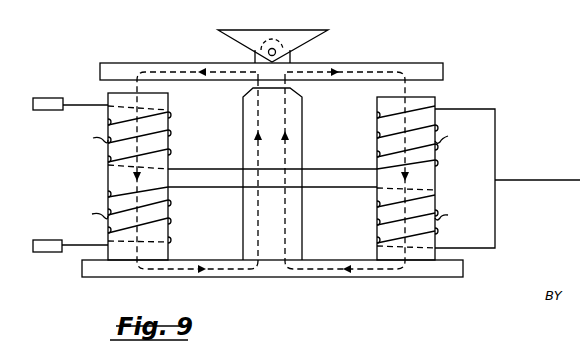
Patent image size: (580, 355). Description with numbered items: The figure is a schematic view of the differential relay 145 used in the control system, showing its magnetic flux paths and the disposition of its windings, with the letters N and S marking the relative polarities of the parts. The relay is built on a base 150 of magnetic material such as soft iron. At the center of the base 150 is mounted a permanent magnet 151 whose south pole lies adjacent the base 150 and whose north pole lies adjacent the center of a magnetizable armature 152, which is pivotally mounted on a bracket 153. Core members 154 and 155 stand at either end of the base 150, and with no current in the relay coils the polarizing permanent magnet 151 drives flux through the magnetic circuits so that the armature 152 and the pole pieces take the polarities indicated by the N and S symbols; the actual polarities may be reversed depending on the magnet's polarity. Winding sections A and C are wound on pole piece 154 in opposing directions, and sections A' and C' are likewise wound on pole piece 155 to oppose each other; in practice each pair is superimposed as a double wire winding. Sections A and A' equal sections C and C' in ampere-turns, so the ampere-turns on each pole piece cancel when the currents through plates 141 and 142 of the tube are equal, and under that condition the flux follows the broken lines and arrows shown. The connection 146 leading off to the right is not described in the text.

The plate 141 is at (55, 95).
The plate 142 is at (49, 240).
The relay 145 is at (221, 139).
The external circuit connection 146 is at (556, 168).
The base 150 is at (427, 278).
The permanent magnet 151 is at (303, 147).
The armature 152 is at (372, 58).
The bracket 153 is at (300, 22).
The core member 154 is at (108, 178).
The core member 155 is at (436, 175).